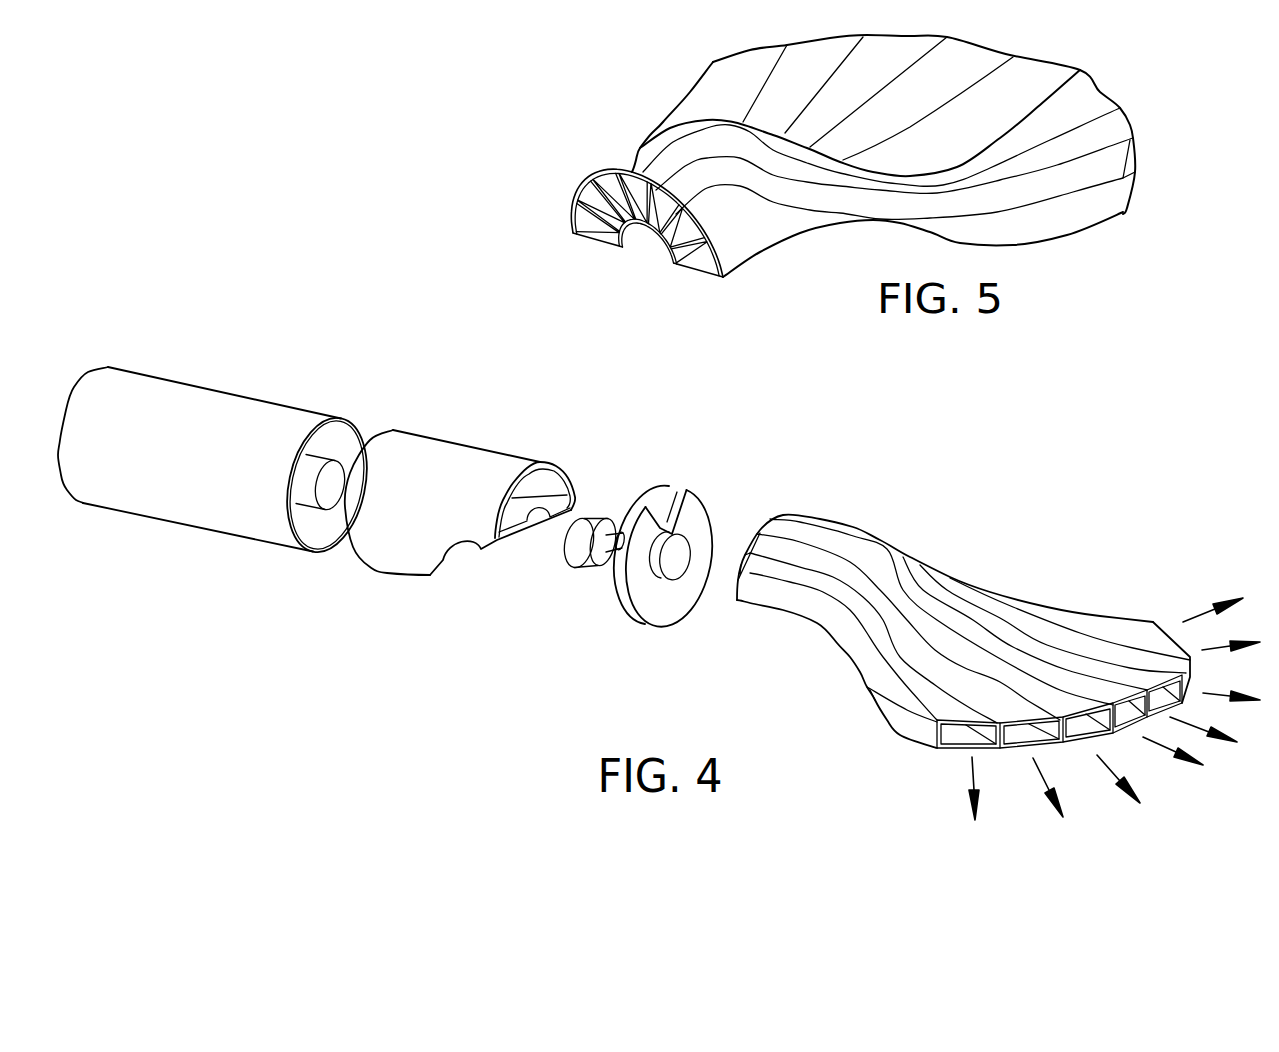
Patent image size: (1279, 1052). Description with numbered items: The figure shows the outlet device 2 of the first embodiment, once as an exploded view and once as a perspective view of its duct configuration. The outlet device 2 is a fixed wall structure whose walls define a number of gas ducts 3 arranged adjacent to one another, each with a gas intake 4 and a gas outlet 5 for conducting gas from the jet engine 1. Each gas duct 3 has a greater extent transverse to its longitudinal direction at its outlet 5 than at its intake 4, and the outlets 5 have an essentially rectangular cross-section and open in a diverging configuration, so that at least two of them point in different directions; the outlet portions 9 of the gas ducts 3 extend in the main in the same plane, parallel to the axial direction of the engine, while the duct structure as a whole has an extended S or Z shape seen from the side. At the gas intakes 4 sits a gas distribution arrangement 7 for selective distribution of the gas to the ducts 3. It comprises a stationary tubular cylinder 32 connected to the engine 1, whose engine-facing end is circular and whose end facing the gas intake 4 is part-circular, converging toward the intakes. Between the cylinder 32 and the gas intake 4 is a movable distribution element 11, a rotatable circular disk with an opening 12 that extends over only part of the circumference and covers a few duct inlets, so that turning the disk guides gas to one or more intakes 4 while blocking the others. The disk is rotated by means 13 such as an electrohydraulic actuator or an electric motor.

In FIG. 4, the jet engine 1 is at (255, 356).
In FIG. 4, the outlet device 2 is at (976, 610).
In FIG. 4, the gas ducts 3 is at (903, 630).
In FIG. 5, the gas intake 4 is at (673, 200).
In FIG. 4, the gas intake 4 is at (711, 586).
In FIG. 4, the gas outlet 5 is at (1097, 733).
In FIG. 4, the gas distribution arrangement 7 is at (552, 416).
In FIG. 4, the outlet portion 9 is at (915, 695).
In FIG. 4, the distribution element 11 is at (609, 658).
In FIG. 4, the opening 12 is at (660, 503).
In FIG. 4, the means for rotation 13 is at (585, 553).
In FIG. 4, the tubular cylinder 32 is at (400, 575).